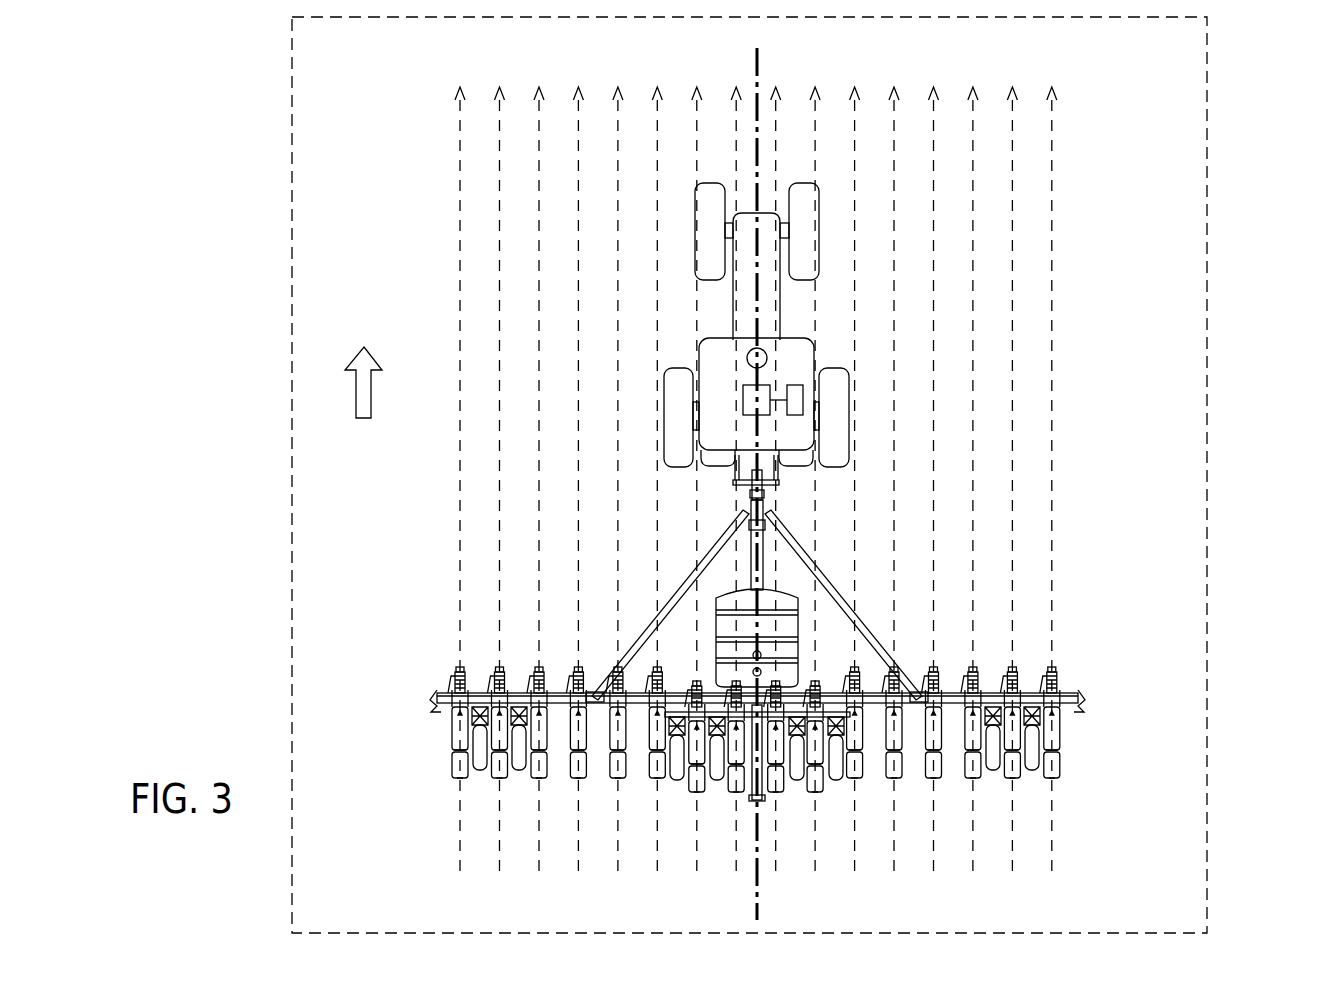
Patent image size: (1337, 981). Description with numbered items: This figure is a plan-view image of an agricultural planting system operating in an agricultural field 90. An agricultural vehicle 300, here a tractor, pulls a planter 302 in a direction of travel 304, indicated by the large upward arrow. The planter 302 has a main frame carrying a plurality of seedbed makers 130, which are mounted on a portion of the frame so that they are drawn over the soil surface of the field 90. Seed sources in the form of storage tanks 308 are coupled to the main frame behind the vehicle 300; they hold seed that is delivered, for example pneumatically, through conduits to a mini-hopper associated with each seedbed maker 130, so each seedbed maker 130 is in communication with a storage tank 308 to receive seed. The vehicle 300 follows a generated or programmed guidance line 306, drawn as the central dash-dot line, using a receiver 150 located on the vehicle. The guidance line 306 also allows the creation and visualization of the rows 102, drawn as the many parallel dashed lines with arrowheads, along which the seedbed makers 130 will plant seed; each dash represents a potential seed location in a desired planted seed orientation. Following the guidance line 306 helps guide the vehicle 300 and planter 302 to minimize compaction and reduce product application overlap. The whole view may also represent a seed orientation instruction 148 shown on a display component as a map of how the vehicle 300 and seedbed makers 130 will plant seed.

The agricultural field 90 is at (1207, 135).
The rows 102 is at (460, 858).
The seedbed makers 130 is at (868, 780).
The seed orientation instruction 148 is at (815, 546).
The receiver 150 is at (768, 357).
The agricultural vehicle 300 is at (659, 334).
The planter 302 is at (704, 712).
The direction of travel 304 is at (364, 392).
The guidance line 306 is at (757, 62).
The storage tanks 308 is at (788, 598).